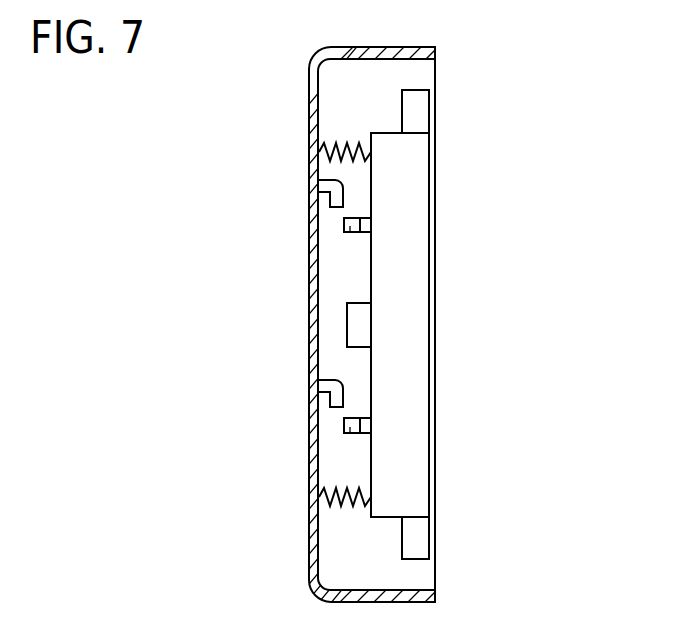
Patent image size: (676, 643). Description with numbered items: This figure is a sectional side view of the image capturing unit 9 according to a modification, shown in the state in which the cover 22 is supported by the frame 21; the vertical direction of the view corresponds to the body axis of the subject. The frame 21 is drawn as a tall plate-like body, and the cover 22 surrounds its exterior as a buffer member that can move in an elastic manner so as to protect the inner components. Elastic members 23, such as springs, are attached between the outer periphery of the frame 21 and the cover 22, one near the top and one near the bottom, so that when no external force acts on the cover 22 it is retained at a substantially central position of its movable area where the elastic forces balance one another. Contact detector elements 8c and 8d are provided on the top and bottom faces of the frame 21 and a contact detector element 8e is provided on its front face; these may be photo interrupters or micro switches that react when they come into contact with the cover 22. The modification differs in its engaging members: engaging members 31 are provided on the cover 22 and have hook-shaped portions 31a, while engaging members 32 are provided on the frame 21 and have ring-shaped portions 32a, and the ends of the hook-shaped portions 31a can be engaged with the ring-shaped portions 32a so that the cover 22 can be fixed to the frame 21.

The cover 22 is at (308, 83).
The elastic members 23 is at (339, 147).
The engaging members 31 is at (328, 185).
The hook-shaped portions 31a is at (331, 204).
The engaging members 32 is at (360, 232).
The ring-shaped portions 32a is at (350, 232).
The contact detector element 8c is at (424, 104).
The contact detector element 8d is at (418, 538).
The contact detector element 8e is at (350, 322).
The frame 21 is at (414, 196).
The image capturing unit 9 is at (508, 103).